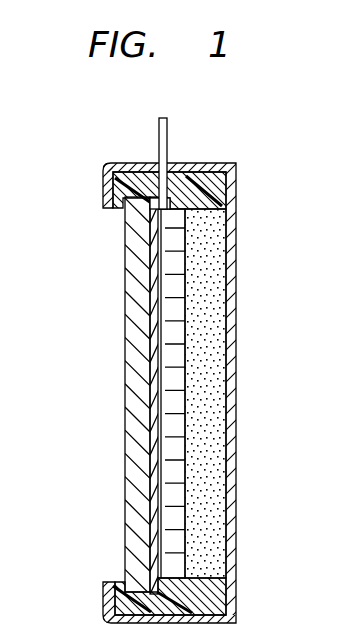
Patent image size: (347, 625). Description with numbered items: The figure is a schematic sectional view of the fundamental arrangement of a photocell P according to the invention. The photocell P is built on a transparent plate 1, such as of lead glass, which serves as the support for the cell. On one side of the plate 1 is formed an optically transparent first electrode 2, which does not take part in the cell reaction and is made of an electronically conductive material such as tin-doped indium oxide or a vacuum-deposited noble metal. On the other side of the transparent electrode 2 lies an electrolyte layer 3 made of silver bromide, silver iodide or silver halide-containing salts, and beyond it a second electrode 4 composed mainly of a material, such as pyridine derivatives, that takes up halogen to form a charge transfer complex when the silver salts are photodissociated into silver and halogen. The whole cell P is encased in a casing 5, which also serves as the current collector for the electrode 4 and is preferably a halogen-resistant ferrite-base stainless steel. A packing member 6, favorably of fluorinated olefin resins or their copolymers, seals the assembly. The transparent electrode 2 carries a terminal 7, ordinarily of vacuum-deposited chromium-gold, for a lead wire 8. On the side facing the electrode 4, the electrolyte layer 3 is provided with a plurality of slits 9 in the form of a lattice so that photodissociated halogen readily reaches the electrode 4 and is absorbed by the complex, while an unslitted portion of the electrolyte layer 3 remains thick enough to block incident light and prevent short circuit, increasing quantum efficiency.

The transparent plate 1 is at (130, 386).
The first electrode 2 is at (150, 302).
The electrolyte layer 3 is at (160, 460).
The second electrode 4 is at (217, 483).
The casing 5 is at (233, 292).
The packing member 6 is at (220, 187).
The terminal 7 is at (140, 207).
The lead wire 8 is at (170, 128).
The slits 9 is at (168, 273).
The photocell P is at (239, 393).